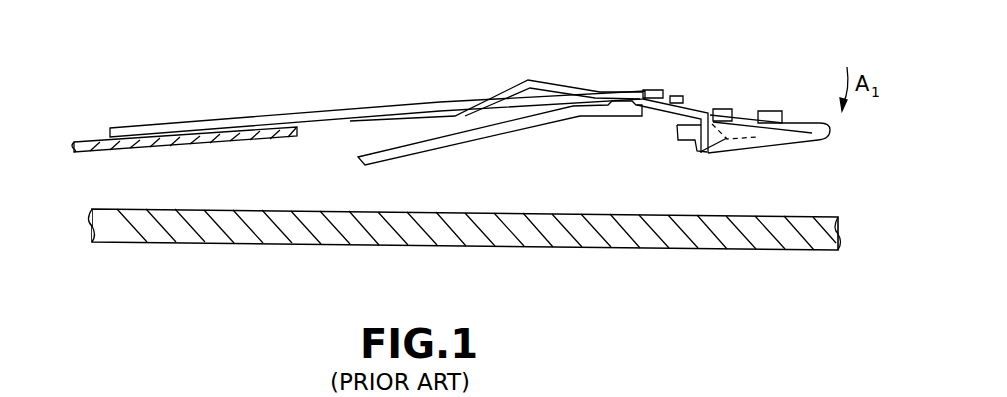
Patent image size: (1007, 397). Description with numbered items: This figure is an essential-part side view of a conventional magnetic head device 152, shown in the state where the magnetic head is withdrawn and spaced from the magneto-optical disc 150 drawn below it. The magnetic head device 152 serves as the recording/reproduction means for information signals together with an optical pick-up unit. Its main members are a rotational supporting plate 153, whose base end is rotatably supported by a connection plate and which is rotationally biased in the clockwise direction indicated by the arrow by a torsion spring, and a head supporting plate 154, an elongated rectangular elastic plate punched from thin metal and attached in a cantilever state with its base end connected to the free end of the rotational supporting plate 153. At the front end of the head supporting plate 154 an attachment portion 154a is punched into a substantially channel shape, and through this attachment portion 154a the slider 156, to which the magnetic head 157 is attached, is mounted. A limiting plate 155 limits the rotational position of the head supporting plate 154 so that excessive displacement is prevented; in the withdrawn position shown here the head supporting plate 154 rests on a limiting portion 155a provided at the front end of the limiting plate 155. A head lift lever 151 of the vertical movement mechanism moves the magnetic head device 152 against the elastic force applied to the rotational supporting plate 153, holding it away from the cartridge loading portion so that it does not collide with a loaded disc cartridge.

The magneto-optical disc 150 is at (823, 226).
The head lift lever 151 is at (463, 138).
The magnetic head device 152 is at (672, 80).
The rotational supporting plate 153 is at (119, 153).
The head supporting plate 154 is at (637, 95).
The attachment portion 154a is at (826, 118).
The limiting plate 155 is at (310, 110).
The limiting portion 155a is at (655, 90).
The slider 156 is at (777, 110).
The magnetic head 157 is at (703, 155).